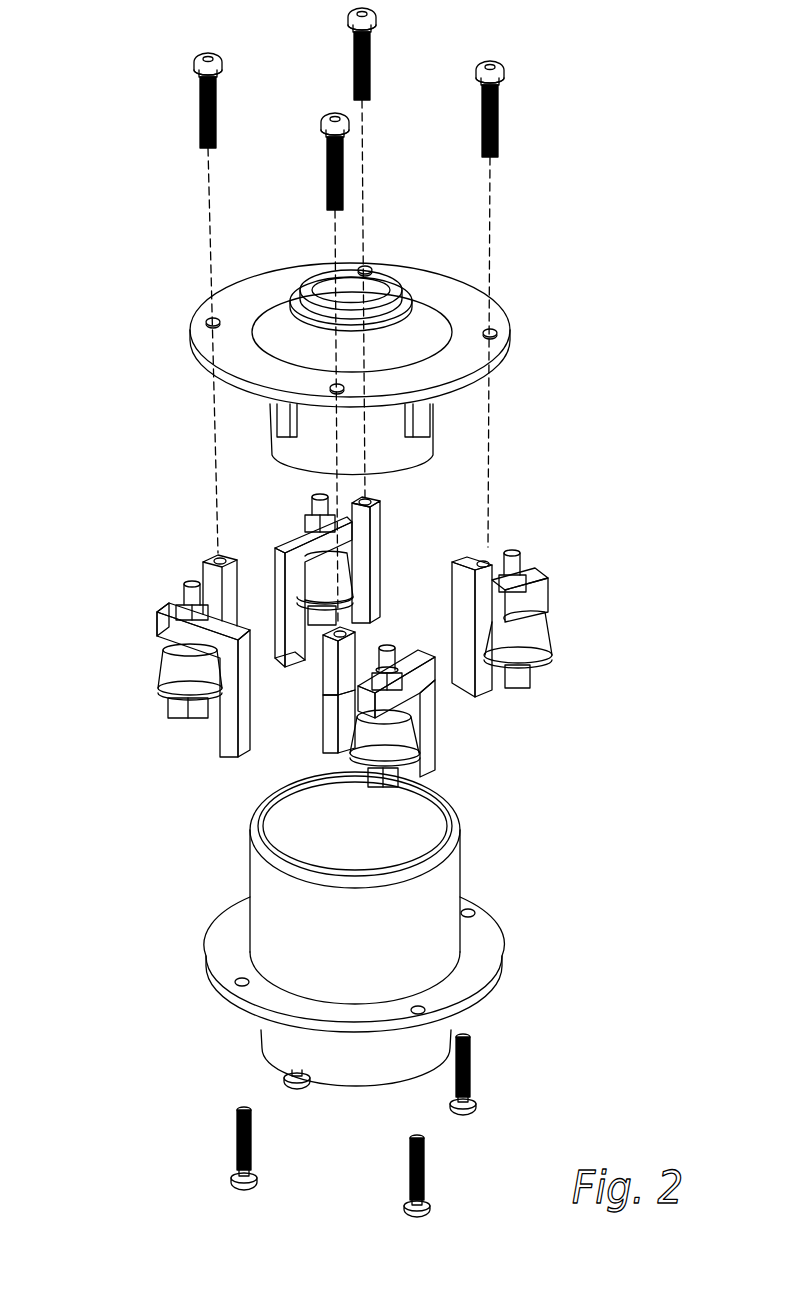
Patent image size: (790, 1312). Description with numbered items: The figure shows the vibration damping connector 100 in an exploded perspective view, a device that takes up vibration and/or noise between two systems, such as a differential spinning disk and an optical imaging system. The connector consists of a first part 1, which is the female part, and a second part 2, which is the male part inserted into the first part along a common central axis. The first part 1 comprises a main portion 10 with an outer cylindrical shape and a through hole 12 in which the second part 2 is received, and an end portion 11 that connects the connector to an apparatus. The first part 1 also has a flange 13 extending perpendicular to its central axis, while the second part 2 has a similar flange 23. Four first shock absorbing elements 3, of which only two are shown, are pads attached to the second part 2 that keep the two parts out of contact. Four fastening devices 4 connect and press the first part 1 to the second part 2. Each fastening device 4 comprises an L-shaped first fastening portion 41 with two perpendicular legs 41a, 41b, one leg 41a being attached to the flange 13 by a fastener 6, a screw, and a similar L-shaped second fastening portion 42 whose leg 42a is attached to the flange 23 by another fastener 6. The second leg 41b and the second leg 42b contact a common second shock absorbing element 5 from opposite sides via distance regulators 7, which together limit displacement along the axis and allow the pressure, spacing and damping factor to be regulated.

The vibration damping connector 100 is at (131, 108).
The fastener 6 is at (330, 110).
The second part 2 is at (530, 308).
The flange 23 is at (500, 365).
The first shock absorbing elements 3 is at (280, 415).
The fastening devices 4 is at (528, 740).
The first fastening portion 41 is at (459, 765).
The leg 41a is at (430, 752).
The second leg 41b is at (415, 683).
The second fastening portion 42 is at (311, 721).
The leg 42a is at (330, 657).
The second leg 42b is at (338, 748).
The second shock absorbing element 5 is at (405, 727).
The distance regulators 7 is at (396, 641).
The first part 1 is at (530, 879).
The main portion 10 is at (440, 893).
The through hole 12 is at (426, 847).
The flange 13 is at (462, 980).
The end portion 11 is at (425, 1040).